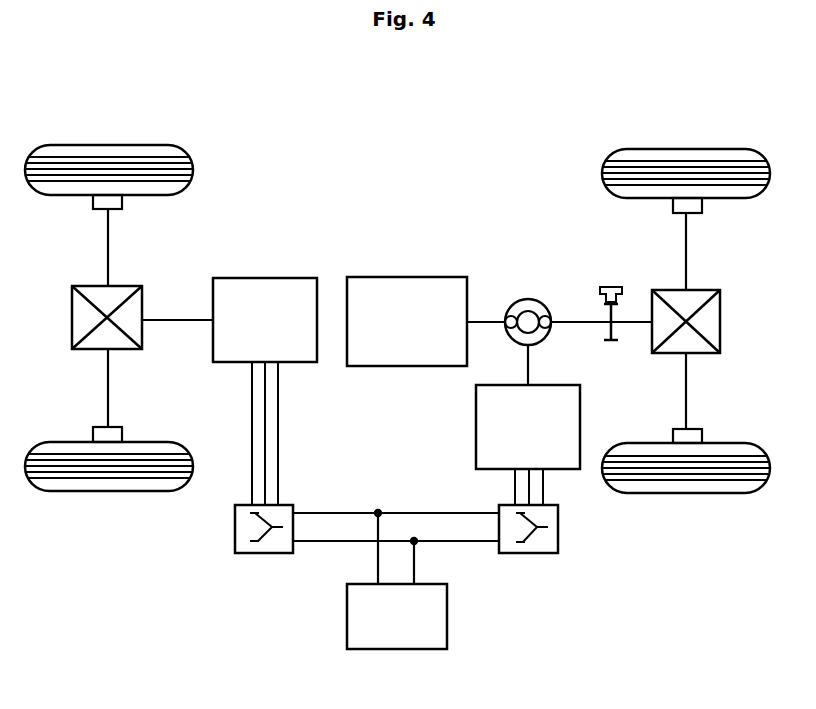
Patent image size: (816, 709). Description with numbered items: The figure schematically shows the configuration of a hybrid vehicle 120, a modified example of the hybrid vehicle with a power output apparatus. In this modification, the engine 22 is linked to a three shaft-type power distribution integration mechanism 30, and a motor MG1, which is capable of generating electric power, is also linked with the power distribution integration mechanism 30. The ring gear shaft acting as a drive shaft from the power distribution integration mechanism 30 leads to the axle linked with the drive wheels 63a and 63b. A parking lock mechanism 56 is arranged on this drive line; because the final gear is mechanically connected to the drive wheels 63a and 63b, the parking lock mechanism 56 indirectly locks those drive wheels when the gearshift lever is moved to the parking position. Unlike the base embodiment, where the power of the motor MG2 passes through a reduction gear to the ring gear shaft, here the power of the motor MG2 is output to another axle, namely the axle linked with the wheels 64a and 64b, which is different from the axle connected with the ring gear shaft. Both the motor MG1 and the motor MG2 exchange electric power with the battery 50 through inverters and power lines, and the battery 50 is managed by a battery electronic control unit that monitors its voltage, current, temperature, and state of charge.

The hybrid vehicle 120 is at (428, 138).
The engine 22 is at (407, 277).
The power distribution integration mechanism 30 is at (528, 299).
The parking lock mechanism 56 is at (610, 282).
The battery 50 is at (447, 614).
The motor MG1 is at (476, 427).
The motor MG2 is at (262, 278).
The drive wheel 63a is at (686, 149).
The drive wheel 63b is at (686, 493).
The wheel 64a is at (108, 145).
The wheel 64b is at (108, 491).